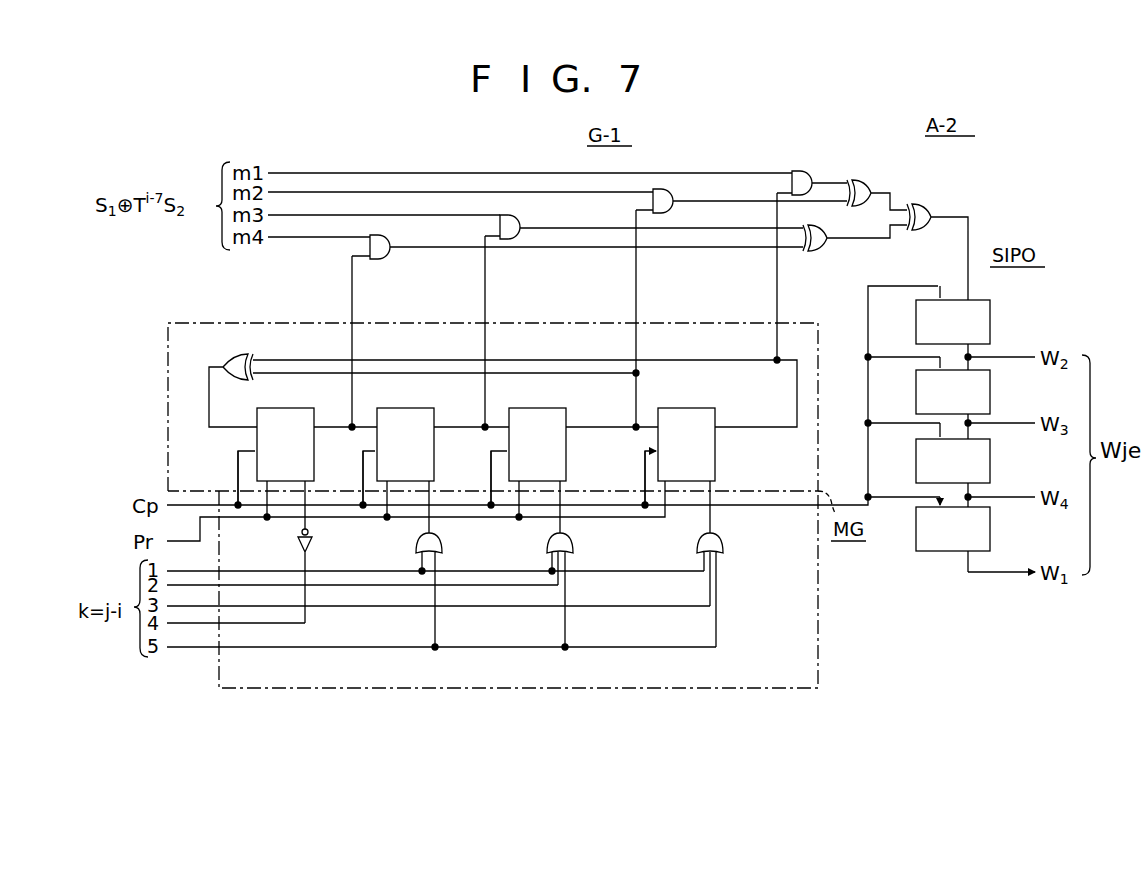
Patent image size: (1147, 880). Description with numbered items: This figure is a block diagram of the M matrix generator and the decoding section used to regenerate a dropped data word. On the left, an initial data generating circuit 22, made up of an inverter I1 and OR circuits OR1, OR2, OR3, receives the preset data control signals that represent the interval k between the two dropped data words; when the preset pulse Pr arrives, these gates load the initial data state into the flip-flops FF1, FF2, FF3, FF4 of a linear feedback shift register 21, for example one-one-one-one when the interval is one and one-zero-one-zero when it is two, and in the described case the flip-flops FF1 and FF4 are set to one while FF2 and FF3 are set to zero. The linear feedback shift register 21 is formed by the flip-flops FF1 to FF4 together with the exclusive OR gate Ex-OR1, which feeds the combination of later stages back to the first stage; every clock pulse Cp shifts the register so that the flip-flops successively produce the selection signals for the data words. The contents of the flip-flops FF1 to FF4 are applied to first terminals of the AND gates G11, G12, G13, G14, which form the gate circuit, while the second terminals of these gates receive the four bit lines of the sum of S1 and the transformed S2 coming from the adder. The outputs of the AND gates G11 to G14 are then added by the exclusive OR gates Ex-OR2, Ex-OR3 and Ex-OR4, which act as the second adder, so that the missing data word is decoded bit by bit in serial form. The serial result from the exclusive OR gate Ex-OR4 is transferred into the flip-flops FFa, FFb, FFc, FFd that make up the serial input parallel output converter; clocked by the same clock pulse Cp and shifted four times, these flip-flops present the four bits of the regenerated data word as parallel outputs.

The linear feedback shift register 21 is at (712, 325).
The initial data generating circuit 22 is at (819, 625).
The AND gate G11 is at (586, 241).
The AND gate G12 is at (651, 221).
The AND gate G13 is at (750, 196).
The AND gate G14 is at (814, 172).
The exclusive OR gate Ex-OR1 is at (246, 378).
The exclusive OR gate Ex-OR2 is at (855, 245).
The exclusive OR gate Ex-OR3 is at (886, 182).
The exclusive OR gate Ex-OR4 is at (948, 242).
The flip-flop FF1 is at (285, 431).
The flip-flop FF2 is at (405, 431).
The flip-flop FF3 is at (537, 431).
The flip-flop FF4 is at (686, 431).
The inverter I1 is at (315, 575).
The OR circuit OR1 is at (451, 588).
The OR circuit OR2 is at (583, 588).
The OR circuit OR3 is at (733, 588).
The flip-flop FFa is at (972, 322).
The flip-flop FFb is at (973, 392).
The flip-flop FFc is at (972, 461).
The flip-flop FFd is at (973, 529).